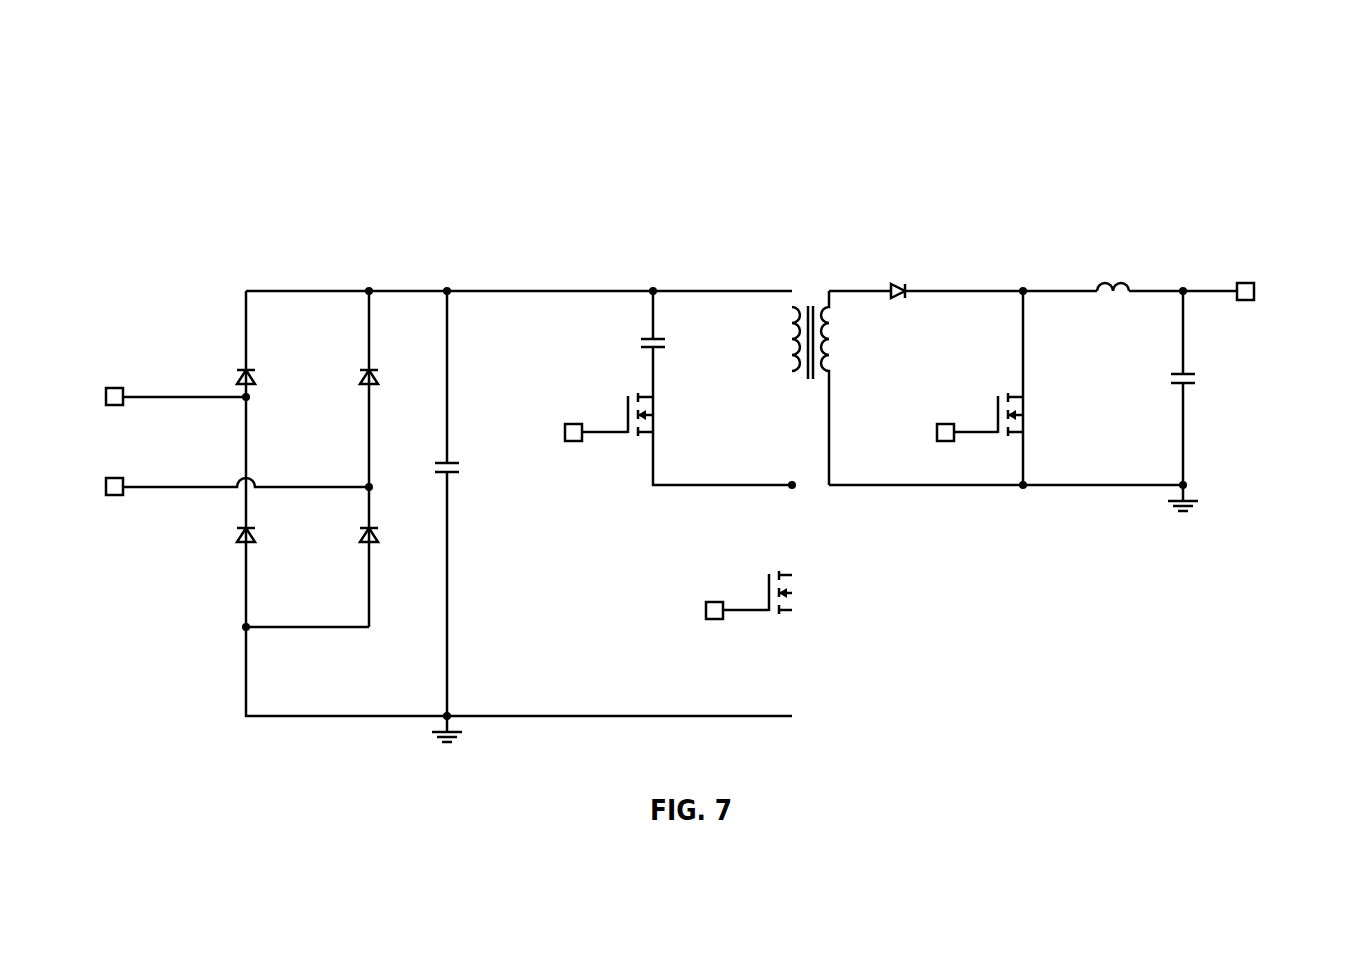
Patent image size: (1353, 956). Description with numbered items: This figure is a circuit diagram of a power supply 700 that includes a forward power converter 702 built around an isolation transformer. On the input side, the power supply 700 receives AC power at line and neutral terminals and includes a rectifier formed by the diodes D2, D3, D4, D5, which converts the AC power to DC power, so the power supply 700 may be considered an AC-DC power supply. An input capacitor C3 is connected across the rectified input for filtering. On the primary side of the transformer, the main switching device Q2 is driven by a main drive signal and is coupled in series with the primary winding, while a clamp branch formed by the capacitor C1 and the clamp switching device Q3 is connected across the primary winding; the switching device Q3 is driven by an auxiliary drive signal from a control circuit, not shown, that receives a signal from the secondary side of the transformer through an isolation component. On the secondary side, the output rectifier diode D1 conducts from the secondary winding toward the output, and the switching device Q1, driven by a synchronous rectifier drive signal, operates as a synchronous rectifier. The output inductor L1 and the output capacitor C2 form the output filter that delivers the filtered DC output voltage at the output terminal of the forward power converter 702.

The power supply 700 is at (296, 96).
The forward power converter 702 is at (779, 266).
The output rectifier diode D1 is at (903, 269).
The bridge rectifier diode D2 is at (224, 534).
The bridge rectifier diode D3 is at (347, 376).
The bridge rectifier diode D4 is at (347, 534).
The bridge rectifier diode D5 is at (224, 376).
The clamp capacitor C1 is at (670, 340).
The output capacitor C2 is at (1199, 382).
The input capacitor C3 is at (465, 470).
The switching device Q1 is at (1005, 433).
The main switch transistor Q2 is at (773, 610).
The switching device Q3 is at (636, 432).
The output inductor L1 is at (1115, 308).